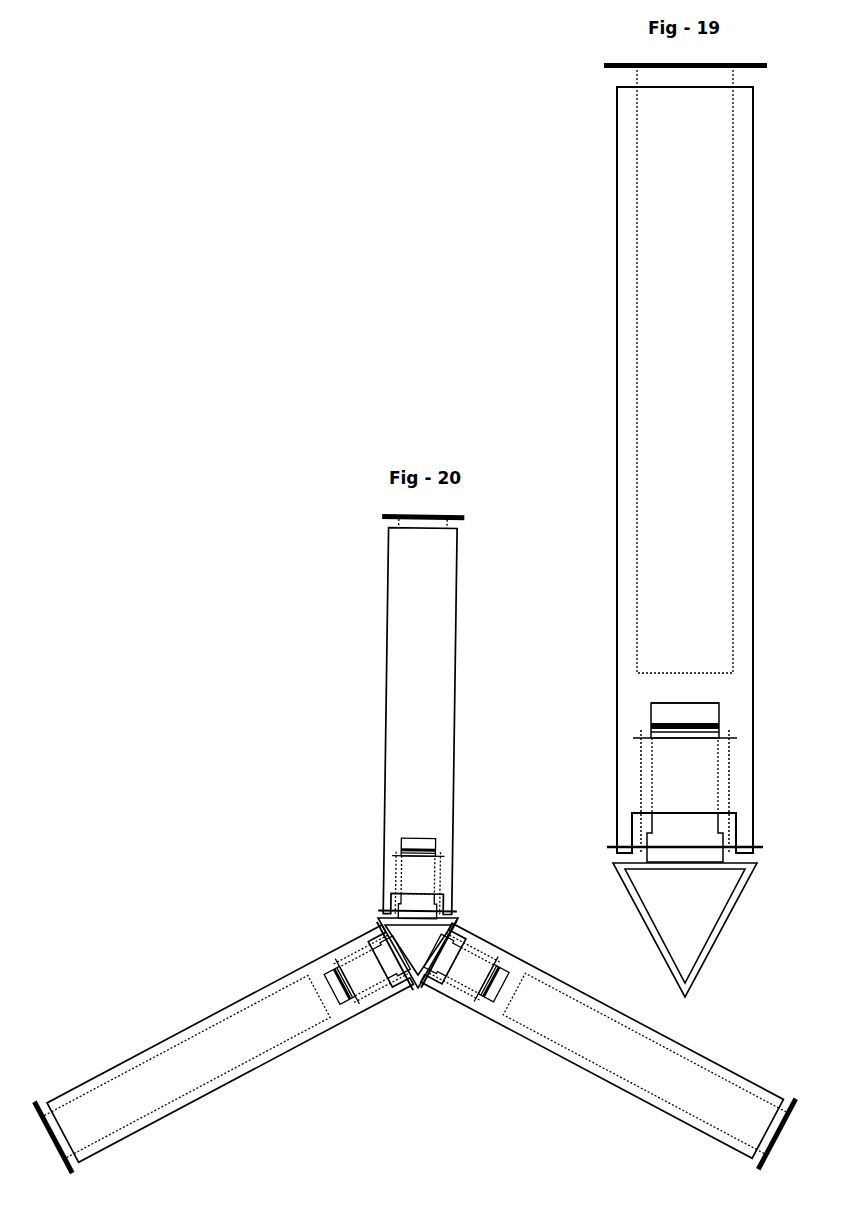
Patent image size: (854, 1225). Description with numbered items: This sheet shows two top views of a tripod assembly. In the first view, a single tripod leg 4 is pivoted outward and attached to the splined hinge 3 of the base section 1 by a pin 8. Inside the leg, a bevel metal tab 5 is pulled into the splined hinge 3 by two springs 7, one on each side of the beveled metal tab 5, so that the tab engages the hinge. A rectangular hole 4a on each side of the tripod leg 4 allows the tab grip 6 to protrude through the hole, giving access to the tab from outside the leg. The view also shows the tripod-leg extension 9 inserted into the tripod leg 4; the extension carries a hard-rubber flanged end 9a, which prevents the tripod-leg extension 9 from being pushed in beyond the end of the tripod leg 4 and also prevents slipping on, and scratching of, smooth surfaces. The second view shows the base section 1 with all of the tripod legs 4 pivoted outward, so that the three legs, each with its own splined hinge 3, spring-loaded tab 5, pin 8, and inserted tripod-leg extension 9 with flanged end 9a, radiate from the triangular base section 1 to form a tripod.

The base section 1 is at (685, 930).
The splined hinge 3 is at (668, 856).
The tripod leg 4 is at (674, 470).
The rectangular hole 4a is at (693, 708).
The bevel metal tab 5 is at (673, 768).
The tab grip 6 is at (640, 721).
The springs 7 is at (632, 785).
The pin 8 is at (598, 849).
The tripod-leg extension 9 is at (675, 249).
The hard-rubber flanged end 9a is at (601, 70).